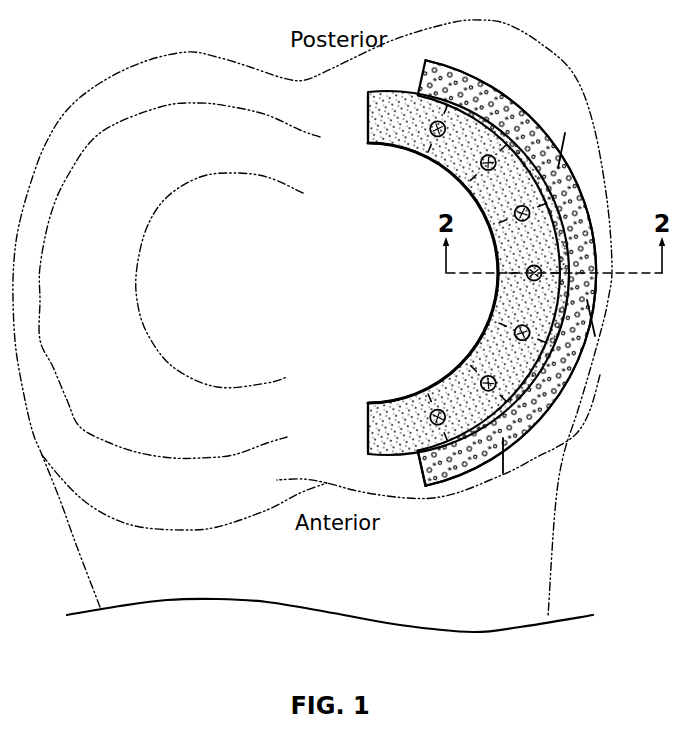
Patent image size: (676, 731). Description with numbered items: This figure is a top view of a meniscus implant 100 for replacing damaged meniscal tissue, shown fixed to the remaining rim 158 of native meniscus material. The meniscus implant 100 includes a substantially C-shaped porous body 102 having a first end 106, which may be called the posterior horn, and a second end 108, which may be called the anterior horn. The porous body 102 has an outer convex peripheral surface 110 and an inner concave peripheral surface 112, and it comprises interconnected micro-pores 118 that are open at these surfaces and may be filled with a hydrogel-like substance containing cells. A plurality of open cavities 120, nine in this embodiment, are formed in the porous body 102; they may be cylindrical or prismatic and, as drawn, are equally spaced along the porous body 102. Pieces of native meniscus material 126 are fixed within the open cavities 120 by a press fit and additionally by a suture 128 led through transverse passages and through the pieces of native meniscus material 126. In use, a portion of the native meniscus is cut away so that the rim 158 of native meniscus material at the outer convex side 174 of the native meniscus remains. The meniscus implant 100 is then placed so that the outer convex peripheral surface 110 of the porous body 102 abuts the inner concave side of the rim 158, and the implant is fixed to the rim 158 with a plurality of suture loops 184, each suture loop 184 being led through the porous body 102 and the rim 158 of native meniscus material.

The meniscus implant 100 is at (580, 42).
The porous body 102 is at (375, 160).
The first end 106 is at (368, 110).
The second end 108 is at (370, 442).
The outer convex peripheral surface 110 is at (496, 140).
The inner concave peripheral surface 112 is at (497, 337).
The interconnected micro-pores 118 is at (397, 410).
The open cavities 120 is at (436, 118).
The pieces of native meniscus material 126 is at (547, 207).
The suture 128 is at (373, 407).
The rim of native meniscus material 158 is at (593, 369).
The outer convex side 174 is at (450, 492).
The suture loops 184 is at (550, 153).